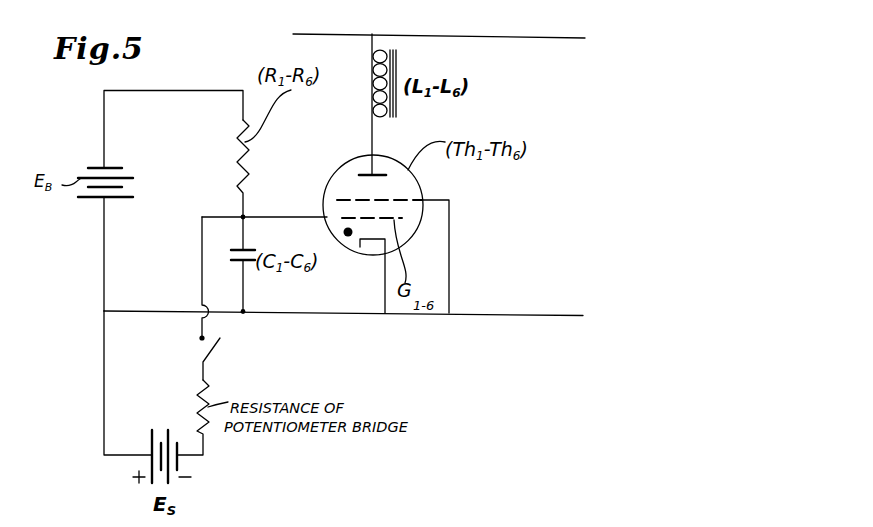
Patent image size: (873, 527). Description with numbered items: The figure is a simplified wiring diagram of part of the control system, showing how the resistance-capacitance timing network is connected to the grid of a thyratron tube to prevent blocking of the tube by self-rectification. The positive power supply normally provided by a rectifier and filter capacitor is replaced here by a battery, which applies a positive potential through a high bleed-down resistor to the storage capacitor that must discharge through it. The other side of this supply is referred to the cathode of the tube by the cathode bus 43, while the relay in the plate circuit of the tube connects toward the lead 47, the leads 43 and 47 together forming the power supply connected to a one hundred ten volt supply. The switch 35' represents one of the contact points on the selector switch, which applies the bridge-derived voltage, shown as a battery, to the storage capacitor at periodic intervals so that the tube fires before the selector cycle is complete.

The lead 47 is at (485, 37).
The cathode bus 43 is at (545, 318).
The switch 35' is at (236, 359).